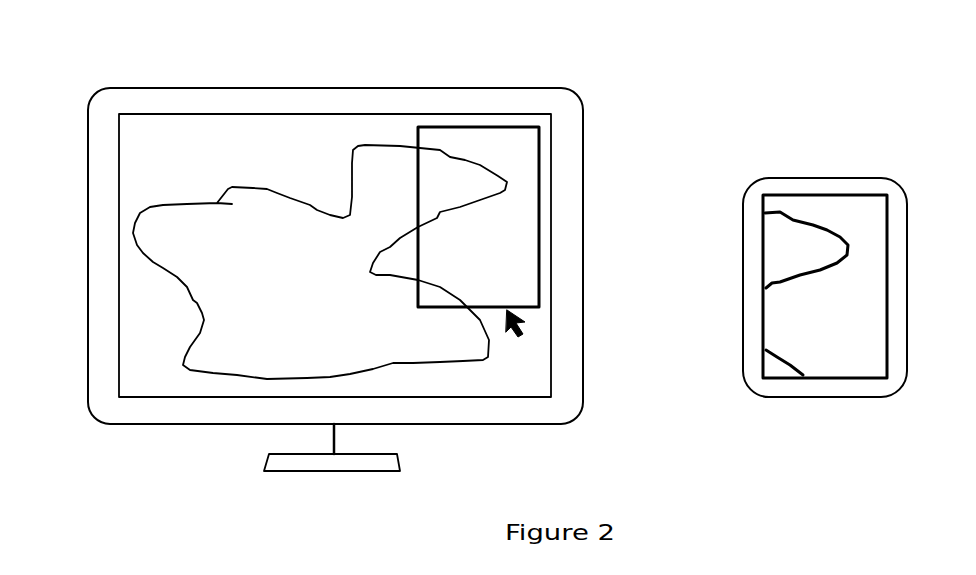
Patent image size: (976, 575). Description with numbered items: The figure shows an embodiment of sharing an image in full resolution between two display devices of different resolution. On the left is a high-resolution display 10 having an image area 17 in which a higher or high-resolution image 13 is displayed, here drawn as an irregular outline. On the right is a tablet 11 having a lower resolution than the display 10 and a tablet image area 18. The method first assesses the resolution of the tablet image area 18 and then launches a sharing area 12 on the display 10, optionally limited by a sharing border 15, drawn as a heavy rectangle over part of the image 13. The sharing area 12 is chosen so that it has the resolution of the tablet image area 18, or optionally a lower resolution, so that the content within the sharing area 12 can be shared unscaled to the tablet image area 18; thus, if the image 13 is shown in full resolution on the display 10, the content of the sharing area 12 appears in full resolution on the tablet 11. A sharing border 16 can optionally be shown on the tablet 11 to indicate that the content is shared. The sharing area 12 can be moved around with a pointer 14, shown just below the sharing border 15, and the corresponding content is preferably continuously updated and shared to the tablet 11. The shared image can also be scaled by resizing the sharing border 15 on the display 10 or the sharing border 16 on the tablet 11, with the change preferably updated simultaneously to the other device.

The high-resolution display 10 is at (85, 130).
The tablet 11 is at (742, 228).
The sharing area 12 is at (505, 143).
The high-resolution image 13 is at (153, 264).
The pointer 14 is at (512, 333).
The sharing border 15 is at (542, 158).
The sharing border 16 is at (879, 267).
The image area 17 is at (153, 130).
The tablet image area 18 is at (860, 332).